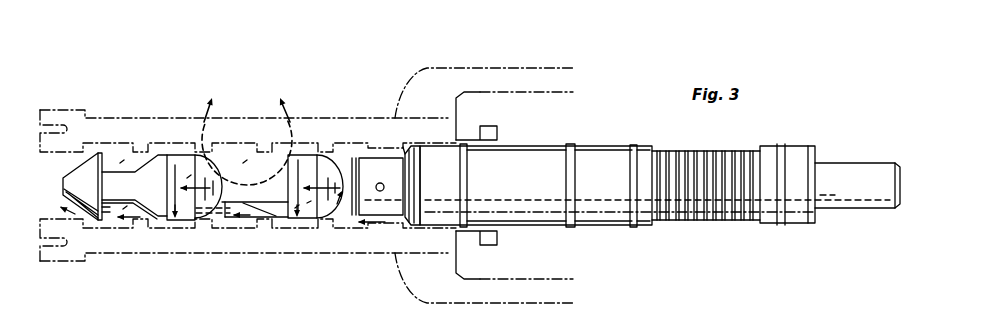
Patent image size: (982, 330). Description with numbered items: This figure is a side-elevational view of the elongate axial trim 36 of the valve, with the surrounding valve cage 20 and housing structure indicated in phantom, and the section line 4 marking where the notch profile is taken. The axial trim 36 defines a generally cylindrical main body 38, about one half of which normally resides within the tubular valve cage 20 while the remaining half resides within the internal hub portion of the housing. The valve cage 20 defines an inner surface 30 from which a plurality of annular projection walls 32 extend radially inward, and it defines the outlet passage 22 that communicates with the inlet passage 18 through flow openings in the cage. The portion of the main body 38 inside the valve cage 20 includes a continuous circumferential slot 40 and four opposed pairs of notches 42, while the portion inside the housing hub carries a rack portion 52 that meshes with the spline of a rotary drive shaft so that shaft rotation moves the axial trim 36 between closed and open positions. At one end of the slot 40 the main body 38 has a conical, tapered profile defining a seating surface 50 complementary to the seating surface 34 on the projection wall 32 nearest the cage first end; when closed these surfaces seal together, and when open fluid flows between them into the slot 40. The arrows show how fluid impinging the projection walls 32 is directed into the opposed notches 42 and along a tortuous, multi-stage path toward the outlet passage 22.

The inlet passage 18 is at (491, 68).
The valve cage 20 is at (96, 116).
The outlet passage 22 is at (248, 222).
The inner surface 30 is at (110, 225).
The projection walls 32 is at (203, 223).
The seating surface 34 is at (409, 224).
The axial trim 36 is at (559, 141).
The main body 38 is at (612, 216).
The slot 40 is at (367, 156).
The notches 42 is at (119, 163).
The seating surface 50 is at (413, 156).
The rack portion 52 is at (728, 206).
The section line 4- 4 is at (245, 133).